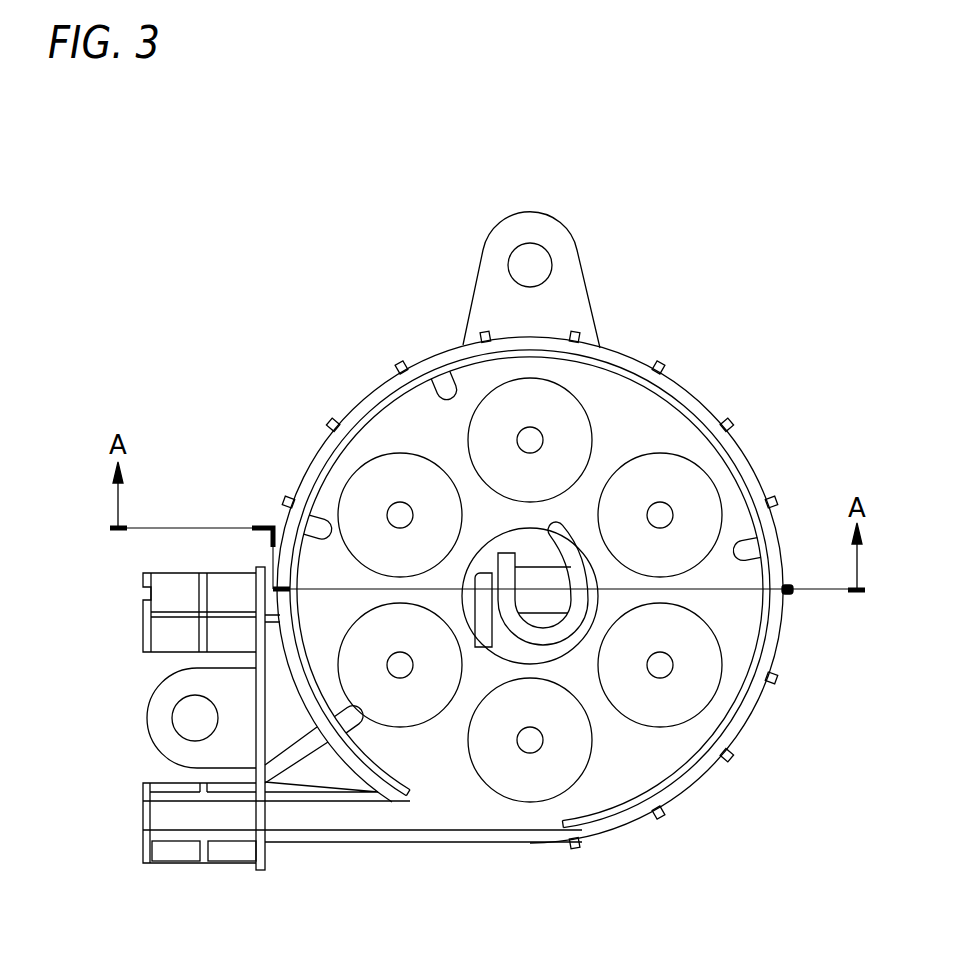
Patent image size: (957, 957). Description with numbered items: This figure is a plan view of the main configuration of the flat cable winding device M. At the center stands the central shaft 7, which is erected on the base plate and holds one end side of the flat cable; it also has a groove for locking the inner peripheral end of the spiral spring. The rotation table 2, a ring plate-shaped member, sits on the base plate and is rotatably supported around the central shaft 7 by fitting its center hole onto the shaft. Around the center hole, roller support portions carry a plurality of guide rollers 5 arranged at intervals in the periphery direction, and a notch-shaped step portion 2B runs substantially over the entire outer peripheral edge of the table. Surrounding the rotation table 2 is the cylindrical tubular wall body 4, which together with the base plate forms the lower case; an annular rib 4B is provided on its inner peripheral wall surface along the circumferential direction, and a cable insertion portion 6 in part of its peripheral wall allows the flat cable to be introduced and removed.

The flat cable winding device M is at (657, 262).
The rotation table 2 is at (740, 618).
The step portion 2B is at (580, 590).
The tubular wall body 4 is at (642, 360).
The rib 4B is at (747, 478).
The guide rollers 5 is at (593, 432).
The central shaft 7 is at (564, 521).
The cable insertion portion 6 is at (148, 812).